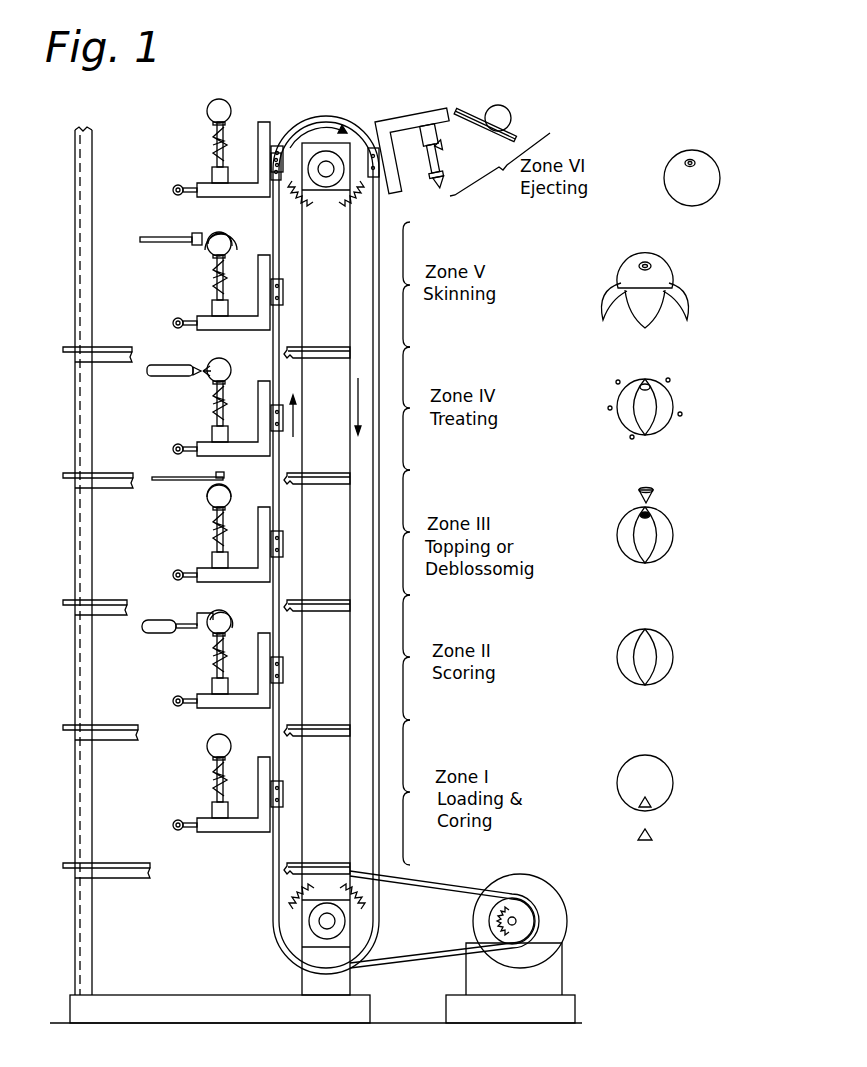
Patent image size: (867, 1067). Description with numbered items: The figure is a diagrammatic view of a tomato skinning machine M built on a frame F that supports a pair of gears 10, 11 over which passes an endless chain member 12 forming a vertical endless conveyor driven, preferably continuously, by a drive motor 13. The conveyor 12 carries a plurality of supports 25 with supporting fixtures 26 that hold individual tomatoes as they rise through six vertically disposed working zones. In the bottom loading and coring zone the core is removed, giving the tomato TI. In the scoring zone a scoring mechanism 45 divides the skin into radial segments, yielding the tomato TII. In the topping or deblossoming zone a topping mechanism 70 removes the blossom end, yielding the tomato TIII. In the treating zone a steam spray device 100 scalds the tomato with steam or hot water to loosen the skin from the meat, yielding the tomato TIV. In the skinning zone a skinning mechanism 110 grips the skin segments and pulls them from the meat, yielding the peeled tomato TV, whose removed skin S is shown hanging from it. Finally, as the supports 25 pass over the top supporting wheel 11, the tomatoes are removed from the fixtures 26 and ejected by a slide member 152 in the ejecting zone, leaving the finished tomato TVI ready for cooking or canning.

The gear 10 is at (358, 928).
The gear 11 is at (293, 148).
The endless chain member 12 is at (280, 858).
The drive motor 13 is at (558, 915).
The support 25 is at (397, 117).
The supporting fixture 26 is at (437, 170).
The scoring mechanism 45 is at (145, 632).
The topping or deblossoming mechanism 70 is at (183, 482).
The steam spray device 100 is at (157, 377).
The skinning mechanism 110 is at (157, 243).
The slide member 152 is at (508, 134).
The frame F is at (75, 572).
The tomato skin S is at (638, 313).
The machine M is at (216, 1059).
The tomato TI is at (672, 777).
The tomato TII is at (672, 652).
The tomato TIII is at (672, 530).
The tomato TIV is at (672, 402).
The tomato TV is at (656, 294).
The tomato TVI is at (720, 174).